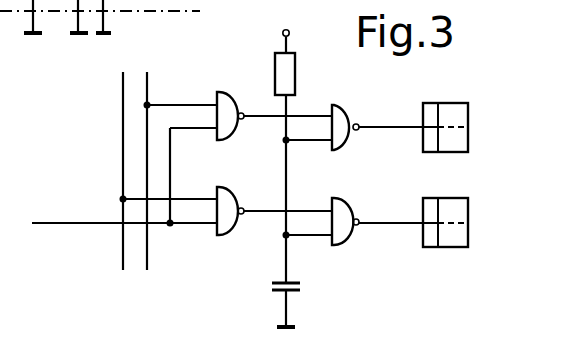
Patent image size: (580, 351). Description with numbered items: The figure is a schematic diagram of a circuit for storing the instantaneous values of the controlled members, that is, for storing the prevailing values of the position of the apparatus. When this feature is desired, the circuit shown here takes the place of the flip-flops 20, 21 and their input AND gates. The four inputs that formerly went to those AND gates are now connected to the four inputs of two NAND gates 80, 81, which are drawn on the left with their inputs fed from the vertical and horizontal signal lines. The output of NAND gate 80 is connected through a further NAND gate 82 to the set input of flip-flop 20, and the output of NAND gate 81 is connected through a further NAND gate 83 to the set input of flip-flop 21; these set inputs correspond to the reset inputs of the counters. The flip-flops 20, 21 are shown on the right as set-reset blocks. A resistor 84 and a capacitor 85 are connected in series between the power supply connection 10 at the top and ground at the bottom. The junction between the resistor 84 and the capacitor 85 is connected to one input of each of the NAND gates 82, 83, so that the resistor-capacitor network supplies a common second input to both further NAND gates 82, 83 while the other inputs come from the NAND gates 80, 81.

The power supply connection 10 is at (288, 31).
The flip-flop 20 is at (461, 118).
The flip-flop 21 is at (458, 212).
The NAND gate 80 is at (219, 98).
The NAND gate 81 is at (228, 197).
The further NAND gate 82 is at (342, 120).
The further NAND gate 83 is at (343, 210).
The resistor 84 is at (284, 74).
The capacitor 85 is at (300, 285).